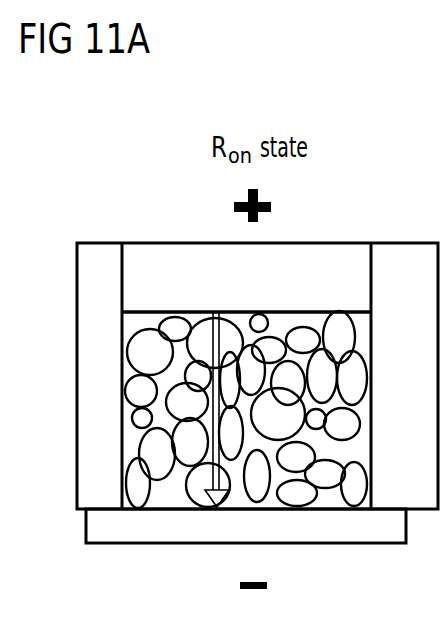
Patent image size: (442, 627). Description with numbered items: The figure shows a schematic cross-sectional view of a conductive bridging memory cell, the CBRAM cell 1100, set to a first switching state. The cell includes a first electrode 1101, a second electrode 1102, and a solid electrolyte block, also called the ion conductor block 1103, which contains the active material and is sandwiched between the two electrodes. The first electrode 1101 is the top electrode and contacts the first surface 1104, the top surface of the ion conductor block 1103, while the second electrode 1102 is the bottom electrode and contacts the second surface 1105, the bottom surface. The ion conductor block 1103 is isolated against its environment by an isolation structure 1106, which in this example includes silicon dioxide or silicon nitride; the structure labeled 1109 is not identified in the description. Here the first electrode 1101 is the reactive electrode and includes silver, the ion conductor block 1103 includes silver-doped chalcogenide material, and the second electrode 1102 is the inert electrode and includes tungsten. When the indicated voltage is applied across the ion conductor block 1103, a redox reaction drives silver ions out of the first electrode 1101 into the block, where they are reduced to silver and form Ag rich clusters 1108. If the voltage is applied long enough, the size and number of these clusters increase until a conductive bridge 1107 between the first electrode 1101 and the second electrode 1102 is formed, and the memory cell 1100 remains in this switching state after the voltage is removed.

The CBRAM cell 1100 is at (349, 142).
The first electrode 1101 is at (197, 252).
The second electrode 1102 is at (167, 532).
The solid electrolyte block 1103 is at (133, 440).
The first surface 1104 is at (133, 313).
The second surface 1105 is at (330, 506).
The isolation structure 1106 is at (105, 252).
The conductive bridge 1107 is at (218, 479).
The Ag rich clusters 1108 is at (337, 318).
The right electrode 1109 is at (403, 255).